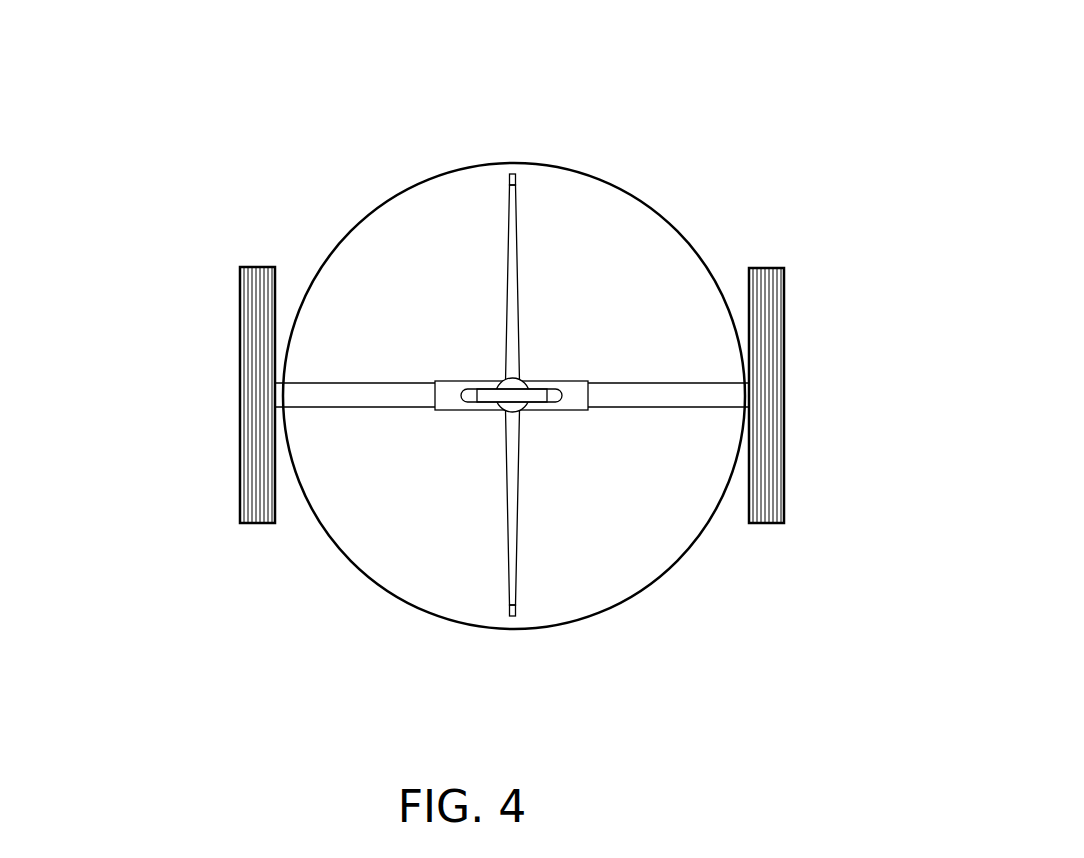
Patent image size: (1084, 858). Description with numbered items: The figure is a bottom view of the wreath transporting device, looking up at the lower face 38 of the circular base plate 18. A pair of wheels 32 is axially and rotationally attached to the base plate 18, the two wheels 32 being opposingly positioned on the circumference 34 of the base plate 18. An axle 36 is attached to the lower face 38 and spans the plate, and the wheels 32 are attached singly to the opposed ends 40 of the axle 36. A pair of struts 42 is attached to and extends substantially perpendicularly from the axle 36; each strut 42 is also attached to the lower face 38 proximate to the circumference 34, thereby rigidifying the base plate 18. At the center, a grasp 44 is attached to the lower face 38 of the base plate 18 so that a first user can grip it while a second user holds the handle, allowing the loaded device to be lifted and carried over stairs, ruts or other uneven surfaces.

The base plate 18 is at (499, 350).
The wheels 32 is at (250, 326).
The circumference 34 is at (535, 162).
The axle 36 is at (345, 407).
The lower face 38 is at (514, 340).
The opposed ends 40 is at (277, 395).
The struts 42 is at (520, 248).
The grasp 44 is at (536, 409).